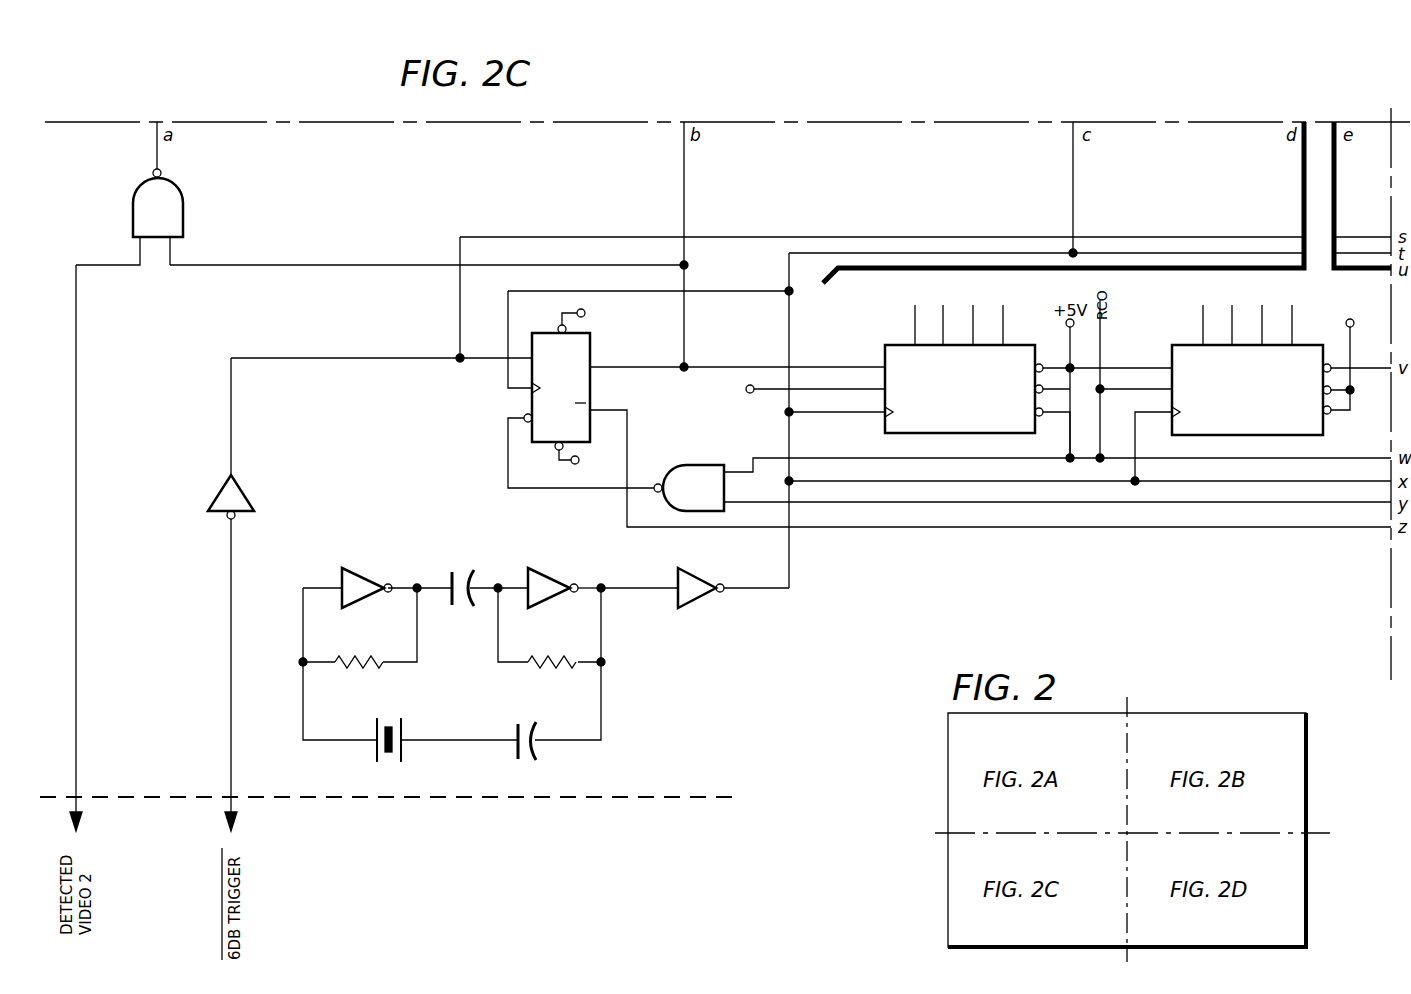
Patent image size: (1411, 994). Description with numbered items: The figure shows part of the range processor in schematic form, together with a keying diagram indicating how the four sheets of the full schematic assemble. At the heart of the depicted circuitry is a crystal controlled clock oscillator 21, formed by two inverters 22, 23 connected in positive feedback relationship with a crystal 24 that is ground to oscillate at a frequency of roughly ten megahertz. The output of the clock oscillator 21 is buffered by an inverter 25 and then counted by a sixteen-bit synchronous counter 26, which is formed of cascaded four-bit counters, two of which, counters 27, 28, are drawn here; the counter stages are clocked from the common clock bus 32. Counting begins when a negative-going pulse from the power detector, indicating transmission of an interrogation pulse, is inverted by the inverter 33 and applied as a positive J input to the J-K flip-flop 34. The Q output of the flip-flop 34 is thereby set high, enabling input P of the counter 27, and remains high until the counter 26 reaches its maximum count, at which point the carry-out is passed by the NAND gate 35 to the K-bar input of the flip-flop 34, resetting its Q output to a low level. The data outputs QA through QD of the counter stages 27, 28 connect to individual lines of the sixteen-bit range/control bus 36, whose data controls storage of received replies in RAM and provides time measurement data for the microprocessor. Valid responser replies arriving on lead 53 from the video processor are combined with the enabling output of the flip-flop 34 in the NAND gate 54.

The crystal controlled clock oscillator 21 is at (452, 636).
The inverter 22 is at (365, 572).
The inverter 23 is at (550, 572).
The crystal 24 is at (402, 722).
The inverter 25 is at (698, 572).
The 16-bit synchronous counter 26 is at (1308, 306).
The 4-bit counter 27 is at (892, 344).
The 4-bit counter 28 is at (1172, 345).
The common clock bus 32 is at (838, 481).
The inverter 33 is at (254, 500).
The J-K flip-flop 34 is at (592, 343).
The NAND gate 35 is at (692, 463).
The 16-bit range/control bus 36 is at (1296, 188).
The lead 53 is at (78, 513).
The NAND gate 54 is at (185, 203).